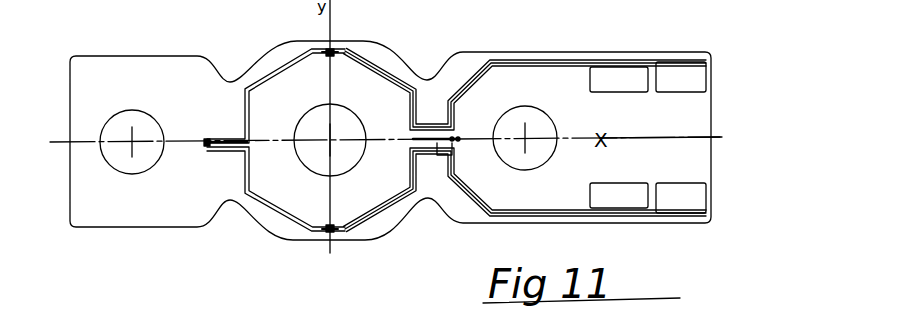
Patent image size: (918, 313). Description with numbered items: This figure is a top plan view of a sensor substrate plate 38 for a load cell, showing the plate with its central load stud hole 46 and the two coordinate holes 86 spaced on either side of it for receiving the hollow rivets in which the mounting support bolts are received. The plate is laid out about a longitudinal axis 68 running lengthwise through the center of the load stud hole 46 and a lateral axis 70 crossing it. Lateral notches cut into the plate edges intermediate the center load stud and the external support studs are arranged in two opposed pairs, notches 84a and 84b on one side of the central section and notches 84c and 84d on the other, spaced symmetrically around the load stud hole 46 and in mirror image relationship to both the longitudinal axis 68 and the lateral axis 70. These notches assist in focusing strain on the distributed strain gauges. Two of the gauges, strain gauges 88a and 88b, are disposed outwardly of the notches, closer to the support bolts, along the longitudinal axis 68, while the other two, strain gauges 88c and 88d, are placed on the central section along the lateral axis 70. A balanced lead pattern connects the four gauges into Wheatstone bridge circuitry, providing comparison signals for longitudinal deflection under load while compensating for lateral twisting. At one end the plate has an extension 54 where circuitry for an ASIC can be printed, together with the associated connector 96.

The sensor substrate plate 38 is at (514, 46).
The load stud hole 46 is at (345, 121).
The extension 54 is at (681, 128).
The longitudinal axis 68 is at (57, 148).
The lateral axis 70 is at (332, 26).
The notch 84a is at (235, 66).
The notch 84b is at (228, 210).
The notch 84c is at (431, 64).
The notch 84d is at (426, 210).
The coordinate holes 86 is at (143, 117).
The strain gauge 88a is at (209, 133).
The strain gauge 88b is at (461, 148).
The strain gauge 88c is at (322, 63).
The strain gauge 88d is at (339, 211).
The connector 96 is at (597, 233).